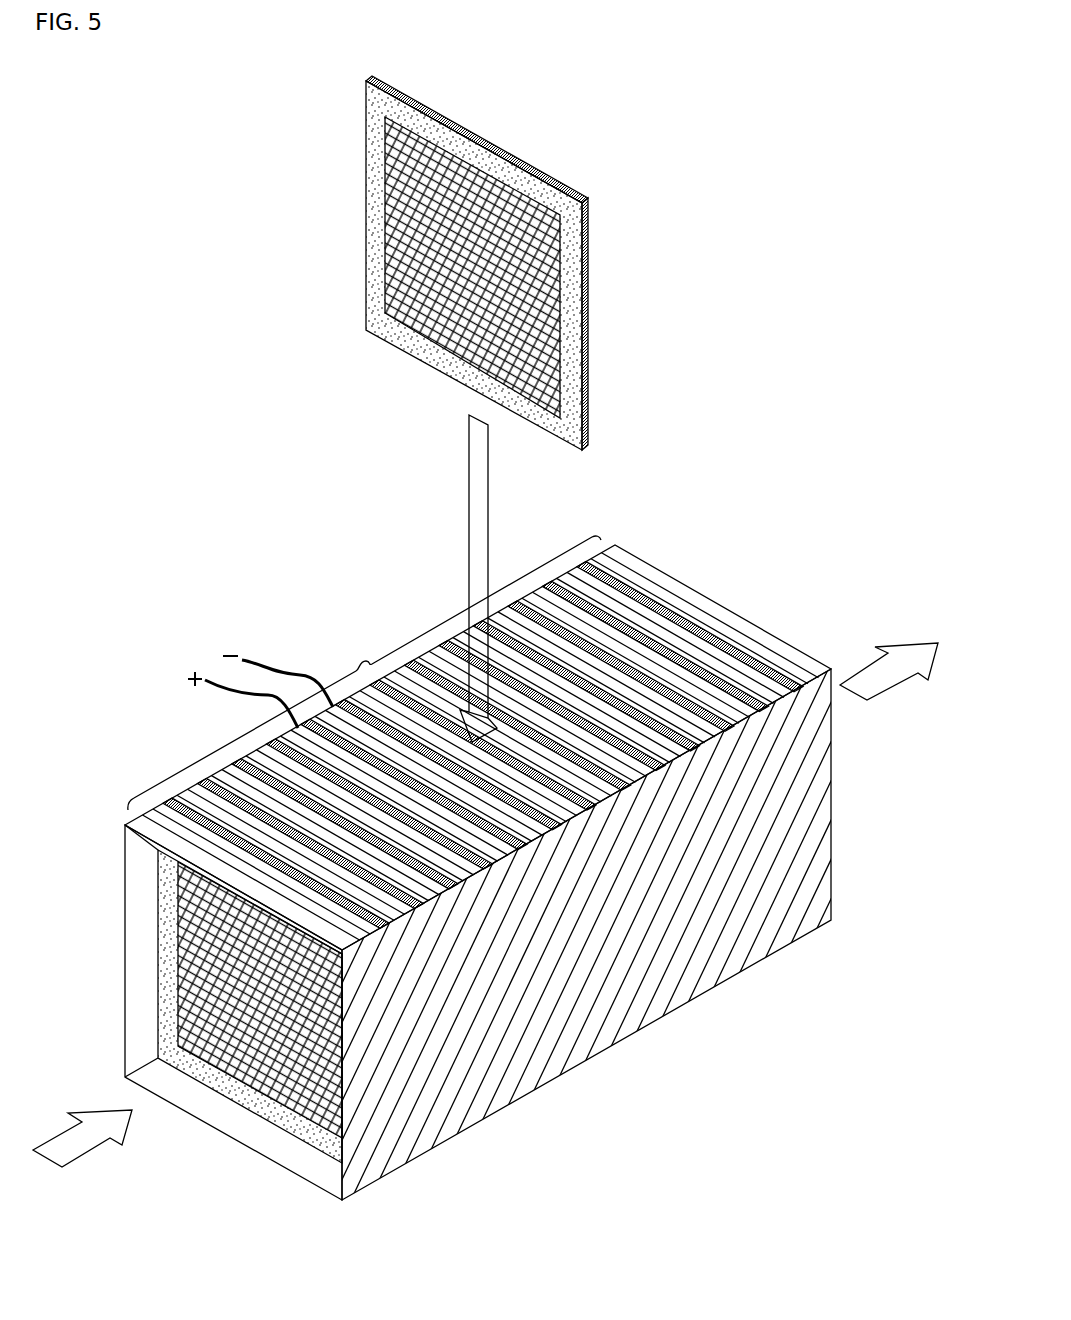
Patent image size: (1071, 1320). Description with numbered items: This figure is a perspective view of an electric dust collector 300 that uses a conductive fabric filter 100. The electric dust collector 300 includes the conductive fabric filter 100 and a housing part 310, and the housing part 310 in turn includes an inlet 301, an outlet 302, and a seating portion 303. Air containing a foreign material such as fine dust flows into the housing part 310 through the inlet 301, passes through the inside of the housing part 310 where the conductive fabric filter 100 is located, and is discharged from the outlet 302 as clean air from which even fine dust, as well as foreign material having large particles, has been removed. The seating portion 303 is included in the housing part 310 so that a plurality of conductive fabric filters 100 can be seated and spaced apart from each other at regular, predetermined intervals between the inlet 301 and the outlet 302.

The conductive fabric filter 100 is at (573, 327).
The electric dust collector 300 is at (579, 824).
The inlet 301 is at (262, 1136).
The outlet 302 is at (740, 634).
The seating portion 303 is at (172, 502).
The housing part 310 is at (700, 606).